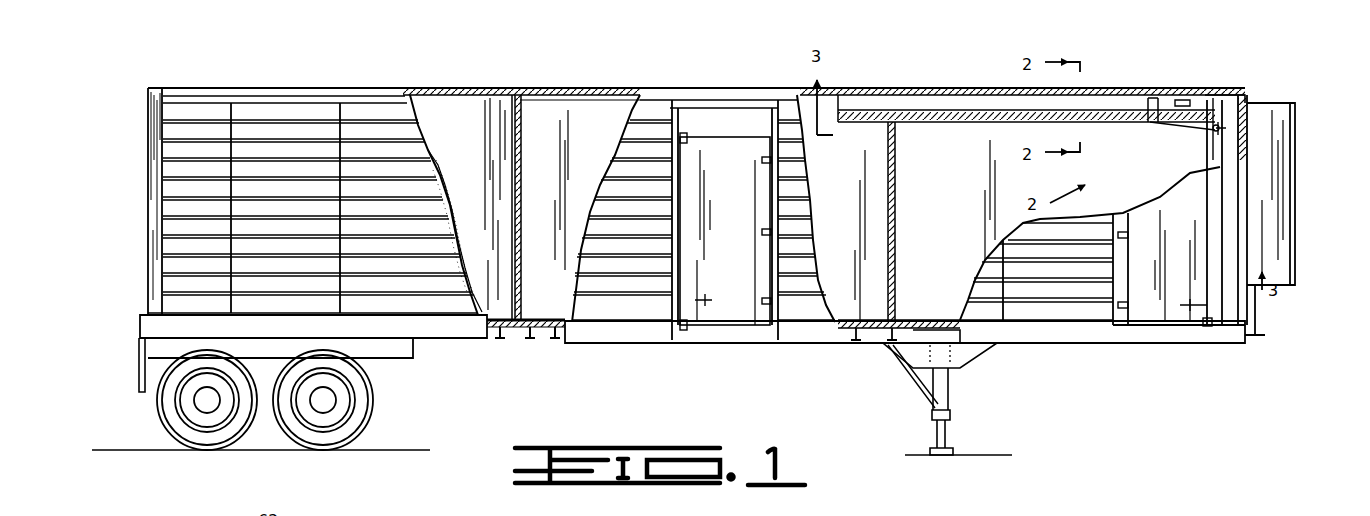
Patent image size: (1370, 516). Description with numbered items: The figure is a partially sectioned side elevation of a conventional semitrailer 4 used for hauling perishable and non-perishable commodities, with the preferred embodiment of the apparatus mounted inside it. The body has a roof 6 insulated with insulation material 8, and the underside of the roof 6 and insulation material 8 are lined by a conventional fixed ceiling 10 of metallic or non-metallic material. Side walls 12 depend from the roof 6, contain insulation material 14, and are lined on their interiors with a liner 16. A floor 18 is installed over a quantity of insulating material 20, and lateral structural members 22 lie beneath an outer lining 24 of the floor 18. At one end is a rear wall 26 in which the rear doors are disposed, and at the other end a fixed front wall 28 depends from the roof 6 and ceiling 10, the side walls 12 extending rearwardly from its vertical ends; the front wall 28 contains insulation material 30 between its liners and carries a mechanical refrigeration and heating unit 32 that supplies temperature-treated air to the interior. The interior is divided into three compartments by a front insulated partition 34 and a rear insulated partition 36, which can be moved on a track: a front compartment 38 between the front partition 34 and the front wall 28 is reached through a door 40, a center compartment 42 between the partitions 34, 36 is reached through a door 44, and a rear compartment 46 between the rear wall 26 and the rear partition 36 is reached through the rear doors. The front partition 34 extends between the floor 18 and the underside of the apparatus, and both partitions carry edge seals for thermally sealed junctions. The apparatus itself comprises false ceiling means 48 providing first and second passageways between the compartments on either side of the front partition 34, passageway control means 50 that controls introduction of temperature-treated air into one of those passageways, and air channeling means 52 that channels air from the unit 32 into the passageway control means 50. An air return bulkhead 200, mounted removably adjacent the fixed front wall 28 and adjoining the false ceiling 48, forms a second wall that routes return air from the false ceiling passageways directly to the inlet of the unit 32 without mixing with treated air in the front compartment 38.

The semitrailer 4 is at (134, 371).
The roof 6 is at (585, 92).
The insulation material 8 is at (563, 92).
The ceiling 10 is at (578, 100).
The side walls 12 is at (402, 138).
The insulation material 14 is at (443, 190).
The liner 16 is at (462, 250).
The floor 18 is at (527, 320).
The insulating material 20 is at (515, 328).
The lateral structural member 22 is at (555, 330).
The outer lining 24 is at (538, 328).
The rear wall 26 is at (152, 86).
The front wall 28 is at (1247, 95).
The insulation material 30 is at (1244, 140).
The refrigeration and heating unit 32 is at (1285, 238).
The front insulated partition 34 is at (898, 242).
The rear insulated partition 36 is at (523, 188).
The front compartment 38 is at (948, 211).
The door 40 is at (1147, 318).
The center compartment 42 is at (849, 203).
The door 44 is at (716, 318).
The rear compartment 46 is at (470, 149).
The false ceiling means 48 is at (948, 127).
The passageway control means 50 is at (1143, 128).
The air channeling means 52 is at (1170, 128).
The air return bulkhead 200 is at (1218, 140).